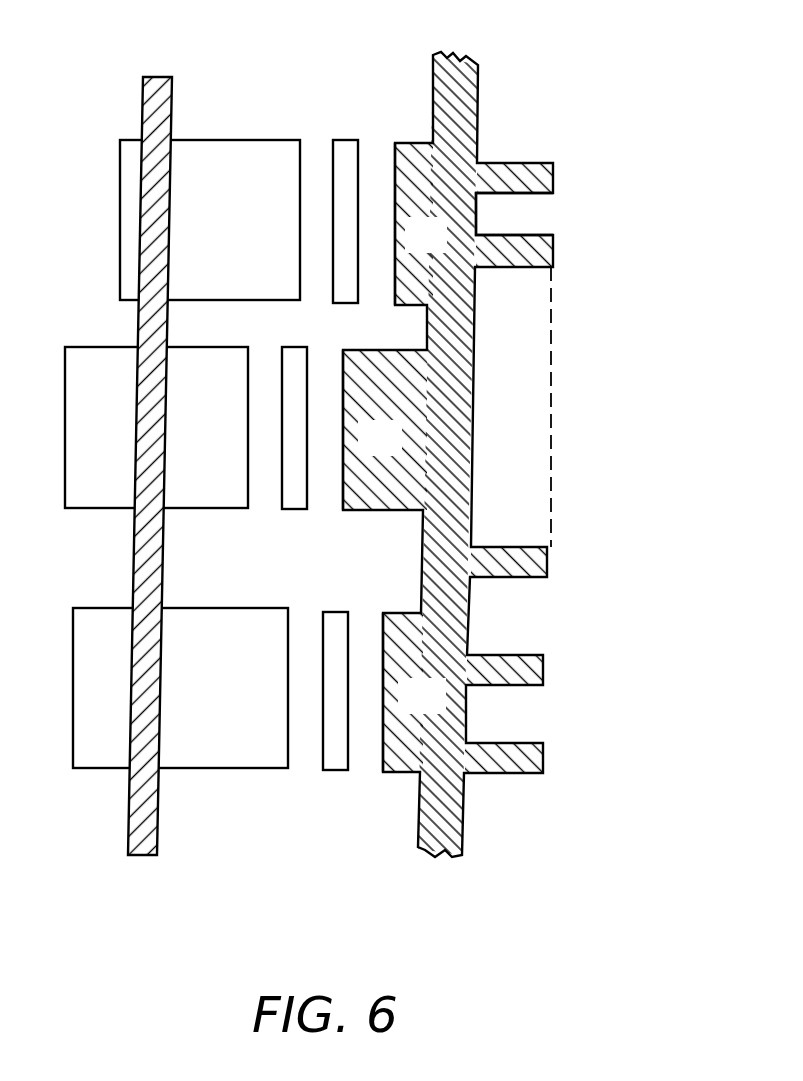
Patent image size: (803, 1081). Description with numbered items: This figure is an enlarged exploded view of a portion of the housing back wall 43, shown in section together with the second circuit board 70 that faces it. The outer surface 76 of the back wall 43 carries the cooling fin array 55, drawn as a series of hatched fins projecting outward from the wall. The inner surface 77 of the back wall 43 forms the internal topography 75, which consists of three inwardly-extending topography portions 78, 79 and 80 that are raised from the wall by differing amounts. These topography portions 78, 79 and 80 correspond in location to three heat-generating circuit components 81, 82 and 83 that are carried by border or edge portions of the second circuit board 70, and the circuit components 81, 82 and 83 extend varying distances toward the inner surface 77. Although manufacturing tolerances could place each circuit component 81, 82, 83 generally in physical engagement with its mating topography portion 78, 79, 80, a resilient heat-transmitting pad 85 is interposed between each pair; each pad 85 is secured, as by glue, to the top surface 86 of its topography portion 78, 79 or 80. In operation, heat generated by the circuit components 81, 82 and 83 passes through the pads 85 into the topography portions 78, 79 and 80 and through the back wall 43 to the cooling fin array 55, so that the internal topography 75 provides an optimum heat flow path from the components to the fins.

The housing back wall 43 is at (498, 430).
The cooling fin array 55 is at (553, 180).
The second circuit board 70 is at (152, 101).
The internal topography 75 is at (355, 95).
The outer surface 76 is at (477, 210).
The inner surface 77 is at (433, 108).
The topography portion 78 is at (446, 250).
The topography portion 79 is at (400, 454).
The topography portion 80 is at (441, 710).
The heat-generating circuit component 81 is at (245, 240).
The heat-generating circuit component 82 is at (223, 449).
The heat-generating circuit component 83 is at (235, 714).
The resilient heat-transmitting pad 85 is at (338, 146).
The top surface 86 is at (395, 258).